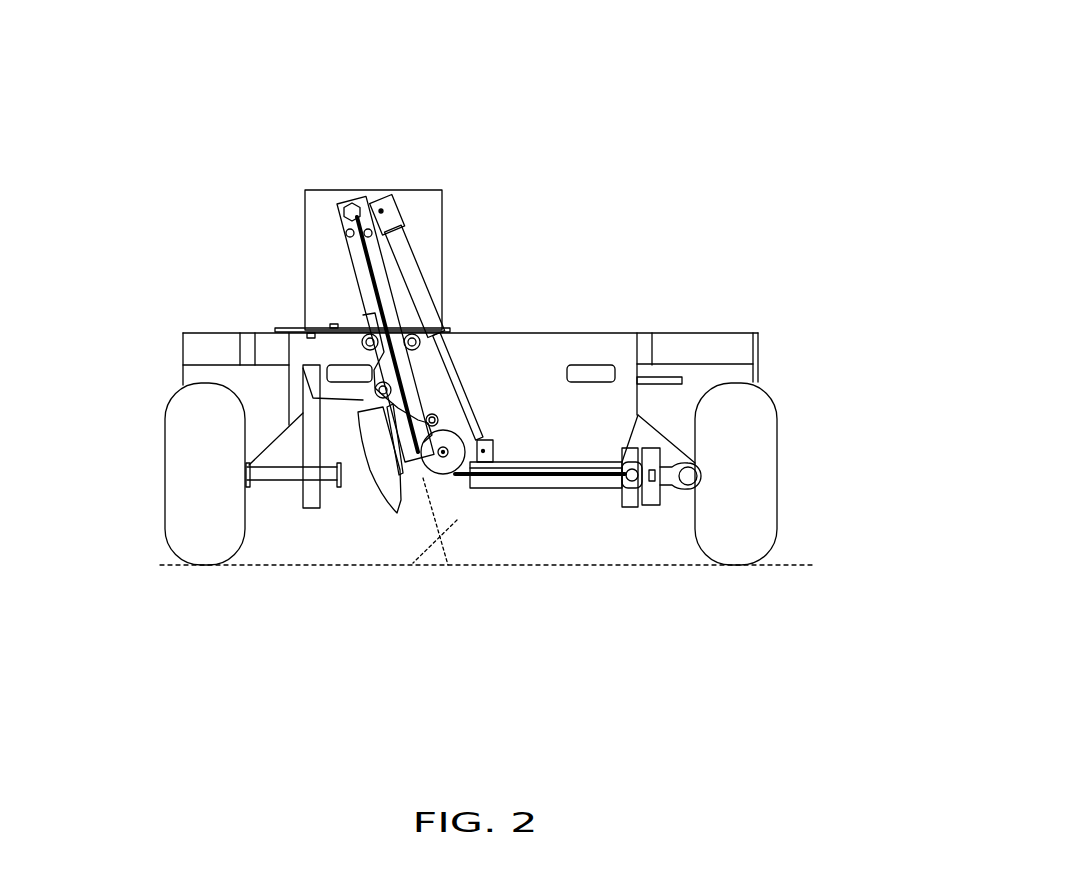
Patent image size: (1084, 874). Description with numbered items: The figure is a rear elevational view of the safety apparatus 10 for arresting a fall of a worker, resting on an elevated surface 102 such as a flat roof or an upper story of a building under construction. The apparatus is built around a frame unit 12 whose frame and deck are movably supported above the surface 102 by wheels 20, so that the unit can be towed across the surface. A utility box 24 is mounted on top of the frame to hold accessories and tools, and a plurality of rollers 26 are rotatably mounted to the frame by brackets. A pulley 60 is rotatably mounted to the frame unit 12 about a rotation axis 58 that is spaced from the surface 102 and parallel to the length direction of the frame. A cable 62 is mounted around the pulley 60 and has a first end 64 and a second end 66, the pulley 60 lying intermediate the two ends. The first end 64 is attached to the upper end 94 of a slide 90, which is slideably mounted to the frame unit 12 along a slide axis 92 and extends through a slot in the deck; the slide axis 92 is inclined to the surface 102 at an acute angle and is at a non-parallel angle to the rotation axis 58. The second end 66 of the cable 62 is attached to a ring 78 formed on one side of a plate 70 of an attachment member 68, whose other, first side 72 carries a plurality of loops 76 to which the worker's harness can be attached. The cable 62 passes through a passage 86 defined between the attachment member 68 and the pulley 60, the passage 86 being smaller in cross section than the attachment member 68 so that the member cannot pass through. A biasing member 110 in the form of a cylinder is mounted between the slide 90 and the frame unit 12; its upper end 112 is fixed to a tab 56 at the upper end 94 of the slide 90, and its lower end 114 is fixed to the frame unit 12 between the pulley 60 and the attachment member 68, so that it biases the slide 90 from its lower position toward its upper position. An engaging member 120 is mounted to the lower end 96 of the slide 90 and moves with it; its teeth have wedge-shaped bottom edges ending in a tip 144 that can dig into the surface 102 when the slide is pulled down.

The safety apparatus 10 is at (462, 144).
The frame unit 12 is at (608, 345).
The wheels 20 is at (183, 525).
The utility box 24 is at (425, 213).
The rollers 26 is at (307, 328).
The tab 56 is at (388, 204).
The rotation axis 58 is at (446, 452).
The pulley 60 is at (446, 448).
The cable 62 is at (550, 472).
The first end 64 is at (357, 220).
The second end 66 is at (625, 478).
The attachment member 68 is at (638, 503).
The plate 70 is at (655, 505).
The first side 72 is at (661, 500).
The loops 76 is at (700, 477).
The ring 78 is at (628, 483).
The passage 86 is at (530, 483).
The slide 90 is at (360, 265).
The slide axis 92 is at (442, 521).
The upper end 94 is at (338, 198).
The lower end 96 is at (412, 393).
The elevated surface 102 is at (802, 565).
The biasing member 110 is at (407, 265).
The upper end 112 is at (382, 200).
The lower end 114 is at (485, 451).
The engaging member 120 is at (343, 498).
The tip 144 is at (397, 514).